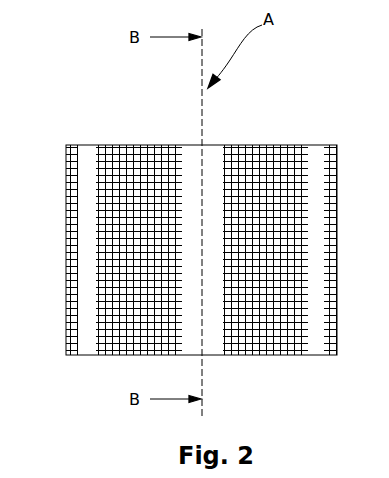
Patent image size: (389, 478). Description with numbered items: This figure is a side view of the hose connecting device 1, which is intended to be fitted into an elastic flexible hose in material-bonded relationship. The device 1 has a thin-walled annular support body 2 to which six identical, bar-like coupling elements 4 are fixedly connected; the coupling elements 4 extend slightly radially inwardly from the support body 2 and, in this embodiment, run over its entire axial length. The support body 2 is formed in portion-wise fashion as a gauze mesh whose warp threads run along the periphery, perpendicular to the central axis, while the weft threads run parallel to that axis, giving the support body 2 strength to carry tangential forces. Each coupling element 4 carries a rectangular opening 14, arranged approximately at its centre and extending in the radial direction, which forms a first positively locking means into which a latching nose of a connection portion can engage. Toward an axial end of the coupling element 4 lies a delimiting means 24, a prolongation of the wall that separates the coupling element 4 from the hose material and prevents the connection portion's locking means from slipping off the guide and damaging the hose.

The hose connecting device 1 is at (303, 95).
The support body 2 is at (248, 137).
The coupling element 4 is at (317, 157).
The opening 14 is at (388, 214).
The delimiting means 24 is at (388, 381).